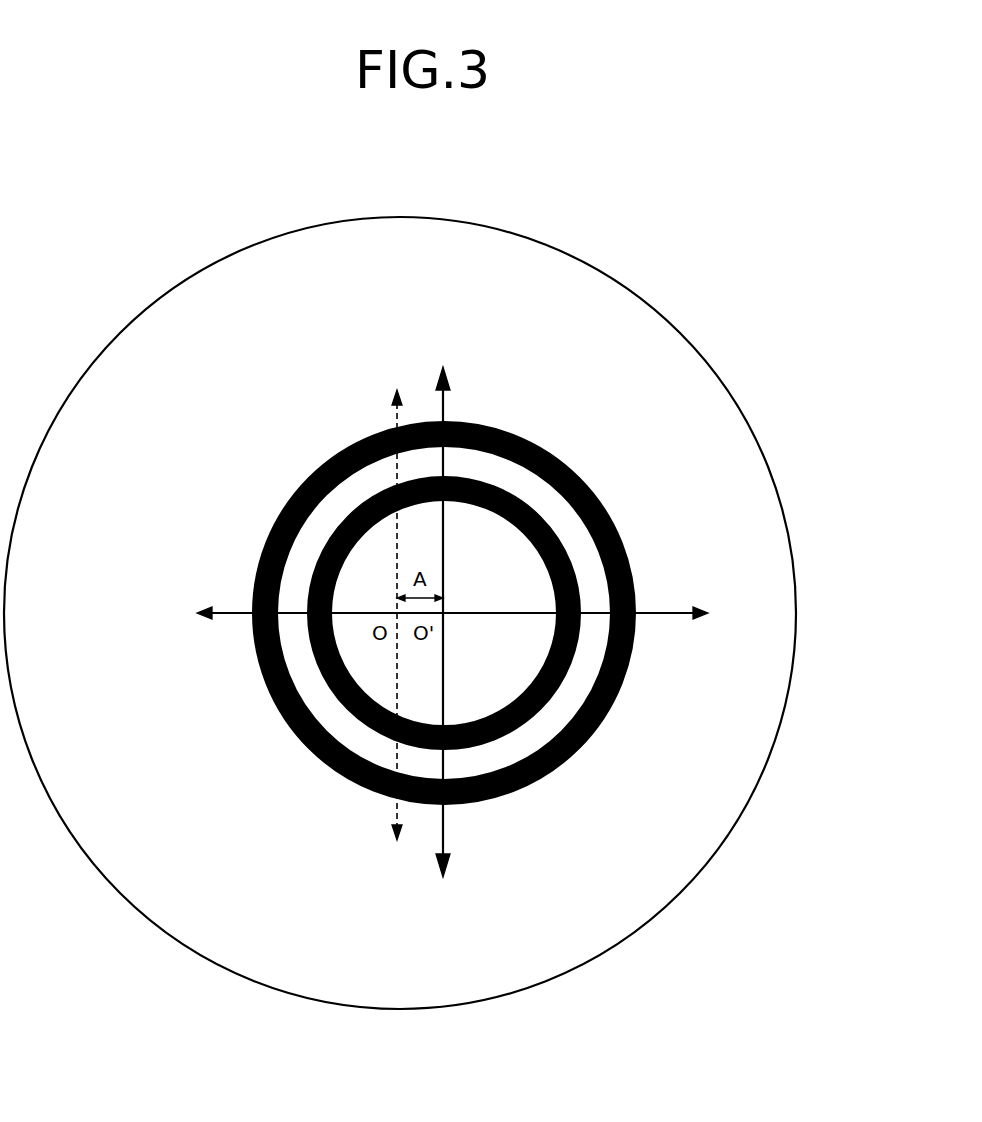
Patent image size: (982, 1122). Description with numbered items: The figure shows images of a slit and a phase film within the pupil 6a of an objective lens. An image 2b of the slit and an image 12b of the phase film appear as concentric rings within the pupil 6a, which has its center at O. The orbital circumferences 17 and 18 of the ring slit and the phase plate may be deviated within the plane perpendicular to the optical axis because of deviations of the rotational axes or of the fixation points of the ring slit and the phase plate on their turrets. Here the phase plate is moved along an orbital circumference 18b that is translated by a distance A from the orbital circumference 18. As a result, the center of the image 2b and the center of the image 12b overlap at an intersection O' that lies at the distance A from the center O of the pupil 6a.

The pupil 6a is at (675, 328).
The image of the phase film 12b is at (597, 493).
The image of the slit 2b is at (597, 655).
The translated orbital circumference 18b is at (446, 407).
The orbital circumference 18 is at (393, 413).
The orbital circumference 17 is at (231, 613).